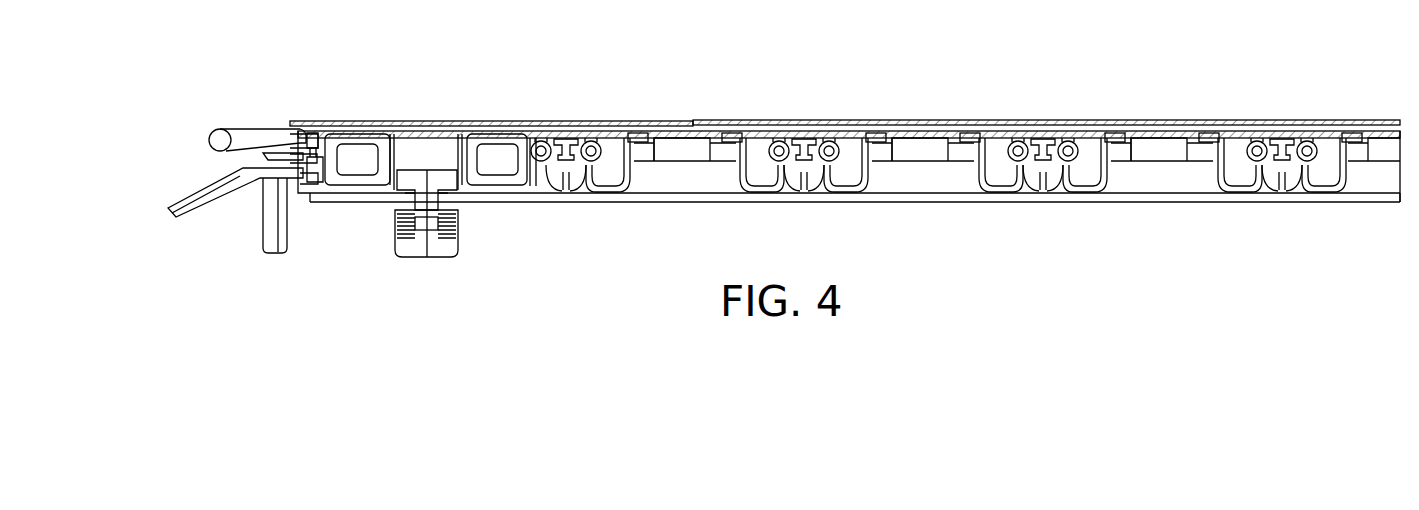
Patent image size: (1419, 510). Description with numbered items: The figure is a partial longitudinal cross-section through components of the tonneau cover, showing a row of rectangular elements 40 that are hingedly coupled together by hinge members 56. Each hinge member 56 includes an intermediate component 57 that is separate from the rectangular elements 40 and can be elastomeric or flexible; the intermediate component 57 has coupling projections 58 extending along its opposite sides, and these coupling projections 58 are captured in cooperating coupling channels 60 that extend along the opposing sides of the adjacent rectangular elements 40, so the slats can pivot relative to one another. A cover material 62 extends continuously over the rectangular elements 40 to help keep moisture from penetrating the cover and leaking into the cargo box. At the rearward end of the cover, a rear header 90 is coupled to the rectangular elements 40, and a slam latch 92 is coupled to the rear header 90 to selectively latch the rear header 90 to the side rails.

The rectangular elements 40 is at (676, 172).
The hinge members 56 is at (806, 186).
The intermediate components 57 is at (808, 134).
The coupling projections 58 is at (1020, 150).
The coupling channels 60 is at (776, 165).
The cover material 62 is at (1165, 120).
The rear header 90 is at (504, 232).
The slam latch 92 is at (447, 292).